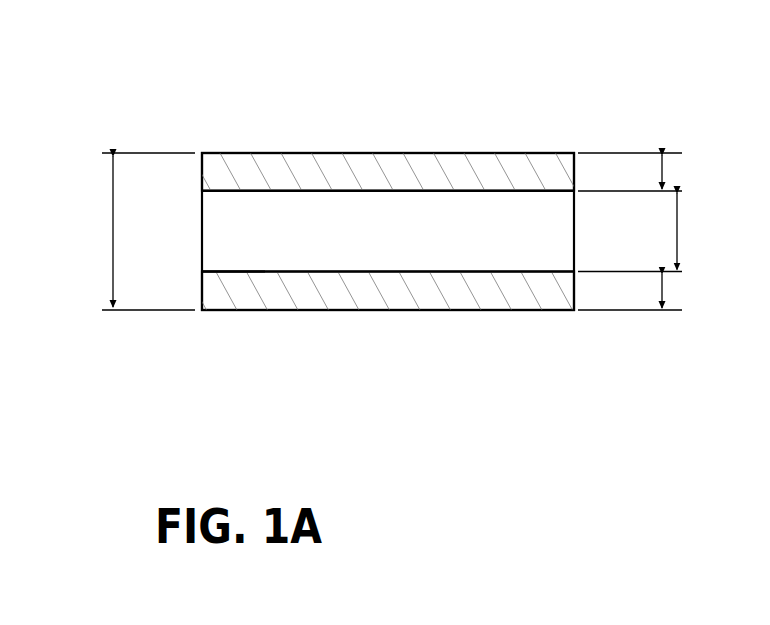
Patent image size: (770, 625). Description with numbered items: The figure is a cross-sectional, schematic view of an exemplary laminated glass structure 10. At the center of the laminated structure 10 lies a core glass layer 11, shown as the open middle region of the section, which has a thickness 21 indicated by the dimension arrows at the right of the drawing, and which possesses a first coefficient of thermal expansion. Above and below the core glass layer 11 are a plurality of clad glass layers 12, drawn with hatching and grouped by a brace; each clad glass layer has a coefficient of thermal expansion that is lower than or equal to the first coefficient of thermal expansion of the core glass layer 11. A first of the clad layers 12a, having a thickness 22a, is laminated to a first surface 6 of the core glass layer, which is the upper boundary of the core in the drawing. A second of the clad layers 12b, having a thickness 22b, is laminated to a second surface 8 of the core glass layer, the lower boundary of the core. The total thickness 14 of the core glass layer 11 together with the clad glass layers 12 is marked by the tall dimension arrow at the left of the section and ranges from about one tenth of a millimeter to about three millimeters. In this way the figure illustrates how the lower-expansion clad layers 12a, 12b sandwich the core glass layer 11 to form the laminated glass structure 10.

The laminated glass structure 10 is at (297, 110).
The first clad layer 12a is at (530, 178).
The second clad layer 12b is at (542, 285).
The clad glass layers 12 is at (574, 190).
The core glass layer 11 is at (280, 228).
The first surface 6 is at (250, 192).
The second surface 8 is at (258, 268).
The total thickness 14 is at (113, 208).
The thickness 21 is at (677, 224).
The thickness 22a is at (663, 172).
The thickness 22b is at (663, 292).